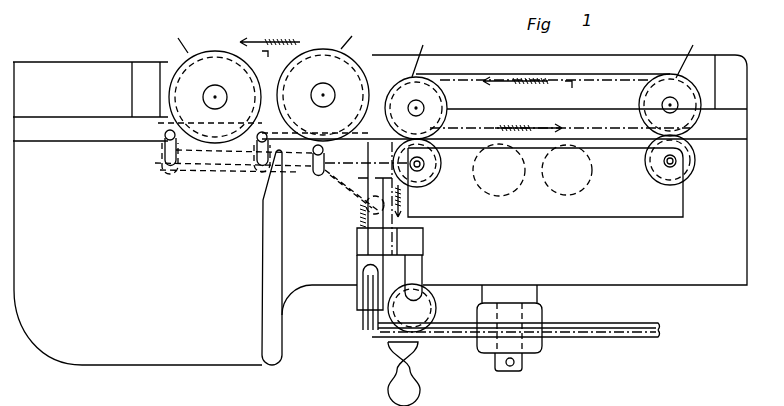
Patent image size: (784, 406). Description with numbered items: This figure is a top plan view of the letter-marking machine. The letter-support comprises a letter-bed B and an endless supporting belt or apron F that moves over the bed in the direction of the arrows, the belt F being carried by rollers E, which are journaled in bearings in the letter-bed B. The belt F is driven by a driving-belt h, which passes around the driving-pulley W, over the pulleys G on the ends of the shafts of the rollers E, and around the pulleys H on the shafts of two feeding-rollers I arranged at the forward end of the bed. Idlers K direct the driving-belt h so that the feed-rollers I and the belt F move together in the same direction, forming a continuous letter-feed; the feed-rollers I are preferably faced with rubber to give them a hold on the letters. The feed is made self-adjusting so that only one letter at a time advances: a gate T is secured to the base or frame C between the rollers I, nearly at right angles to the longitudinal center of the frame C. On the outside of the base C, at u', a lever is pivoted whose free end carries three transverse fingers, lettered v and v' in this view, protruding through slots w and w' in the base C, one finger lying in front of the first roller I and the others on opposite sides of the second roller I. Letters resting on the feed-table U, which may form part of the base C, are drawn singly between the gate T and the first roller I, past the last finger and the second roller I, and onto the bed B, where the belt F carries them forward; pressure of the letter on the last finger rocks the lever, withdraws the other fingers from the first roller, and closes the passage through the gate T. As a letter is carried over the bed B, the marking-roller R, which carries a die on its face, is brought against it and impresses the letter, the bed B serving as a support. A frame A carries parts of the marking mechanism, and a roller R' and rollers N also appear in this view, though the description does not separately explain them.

The base or frame C is at (380, 185).
The feed-table U is at (138, 213).
The gate T is at (272, 257).
The letter-bed B is at (95, 133).
The pulleys H is at (222, 82).
The feeding-rollers I is at (178, 41).
The pulleys G is at (543, 106).
The rollers E is at (558, 53).
The endless supporting belt or apron F is at (592, 74).
The driving-belt h is at (419, 133).
The frame A is at (545, 182).
The marking-roller R is at (564, 165).
The roller R' is at (494, 166).
The guide rollers N is at (413, 157).
The pivot point of lever u' is at (395, 175).
The transverse fingers v is at (233, 148).
The pin v' is at (253, 149).
The slots w is at (159, 161).
The pin guide w' is at (252, 162).
The driving-pulley W is at (592, 318).
The idlers K is at (366, 328).